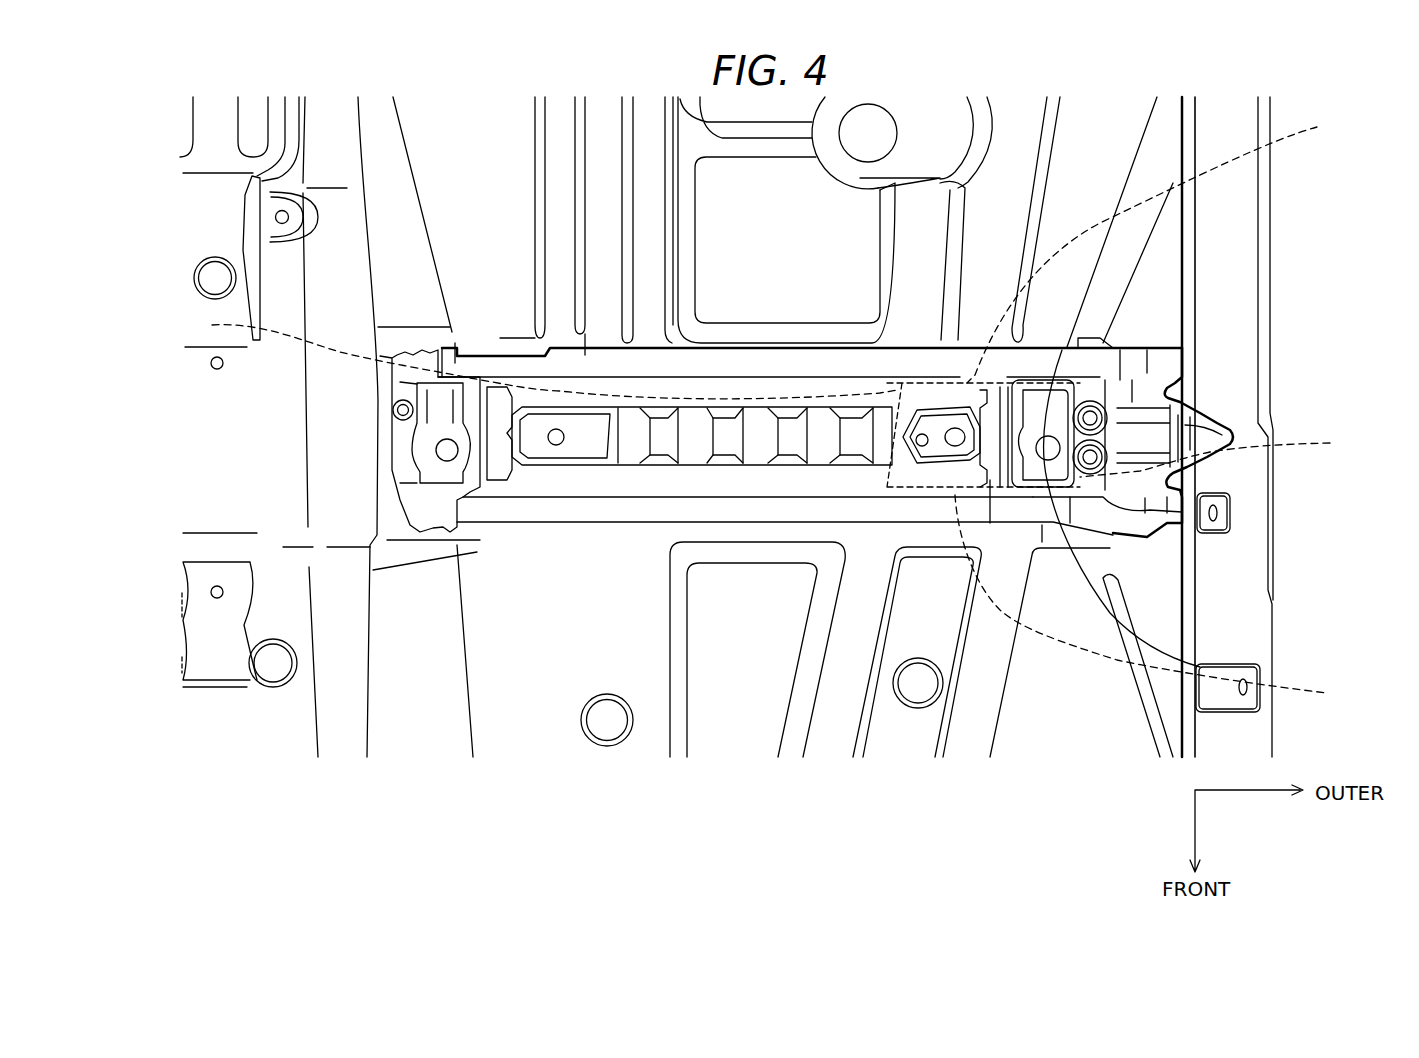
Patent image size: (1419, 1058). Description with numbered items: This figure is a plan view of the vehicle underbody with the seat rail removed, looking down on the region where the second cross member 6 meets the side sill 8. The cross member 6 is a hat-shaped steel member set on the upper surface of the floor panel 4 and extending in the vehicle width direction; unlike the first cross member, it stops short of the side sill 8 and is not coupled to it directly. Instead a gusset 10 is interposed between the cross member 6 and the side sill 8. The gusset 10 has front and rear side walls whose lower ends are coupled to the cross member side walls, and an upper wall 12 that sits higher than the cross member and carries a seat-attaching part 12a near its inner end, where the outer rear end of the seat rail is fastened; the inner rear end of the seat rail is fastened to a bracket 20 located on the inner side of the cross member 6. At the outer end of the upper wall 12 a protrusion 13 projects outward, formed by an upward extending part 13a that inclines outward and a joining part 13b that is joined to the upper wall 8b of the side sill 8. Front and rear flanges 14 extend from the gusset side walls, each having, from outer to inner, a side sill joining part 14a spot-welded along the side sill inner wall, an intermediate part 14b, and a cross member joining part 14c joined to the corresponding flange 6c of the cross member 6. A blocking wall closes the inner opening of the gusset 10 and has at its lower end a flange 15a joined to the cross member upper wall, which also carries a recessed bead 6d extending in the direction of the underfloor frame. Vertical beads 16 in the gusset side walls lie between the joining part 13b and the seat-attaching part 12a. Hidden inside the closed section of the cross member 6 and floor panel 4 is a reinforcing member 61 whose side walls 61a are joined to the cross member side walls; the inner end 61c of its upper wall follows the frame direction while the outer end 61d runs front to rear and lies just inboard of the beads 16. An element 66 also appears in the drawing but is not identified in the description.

The floor panel 4 is at (1070, 168).
The second cross member 6 is at (597, 385).
The flanges of the second cross member 6c is at (515, 357).
The bead 6d is at (857, 443).
The side sill 8 is at (1237, 738).
The upper wall of the side sill 8b is at (1235, 462).
The gusset 10 is at (1062, 350).
The upper wall of the gusset 12 is at (1170, 380).
The seat-attaching part 12a is at (1047, 557).
The protrusion 13 is at (1340, 372).
The upward extending part 13a is at (1170, 410).
The joining part 13b is at (1183, 440).
The flanges of the gusset 14 is at (1340, 258).
The side sill joining part 14a is at (1168, 372).
The intermediate part 14b is at (1125, 380).
The cross member joining part 14c is at (1108, 375).
The flange of the blocking wall 15a is at (992, 480).
The beads 16 is at (1075, 365).
The bracket 20 is at (440, 403).
The reinforcing member 61 is at (1160, 249).
The side walls of the reinforcing member 61a is at (1169, 602).
The inner end of the upper wall of the reinforcing member 61c is at (531, 354).
The outer end of the upper wall of the reinforcing member 61d is at (1229, 453).
The load transmission member 66 is at (557, 480).